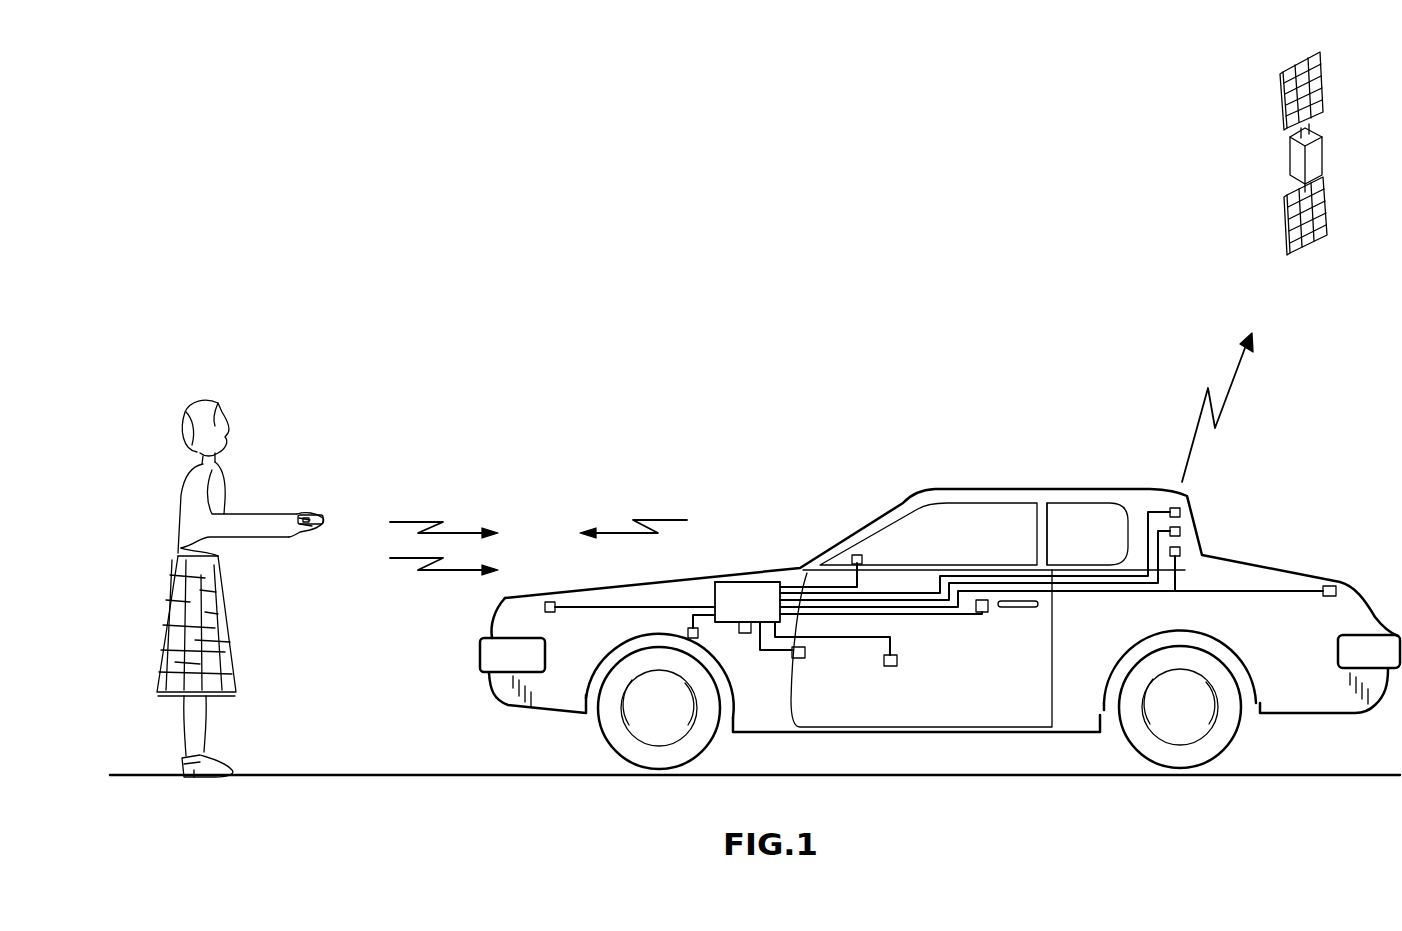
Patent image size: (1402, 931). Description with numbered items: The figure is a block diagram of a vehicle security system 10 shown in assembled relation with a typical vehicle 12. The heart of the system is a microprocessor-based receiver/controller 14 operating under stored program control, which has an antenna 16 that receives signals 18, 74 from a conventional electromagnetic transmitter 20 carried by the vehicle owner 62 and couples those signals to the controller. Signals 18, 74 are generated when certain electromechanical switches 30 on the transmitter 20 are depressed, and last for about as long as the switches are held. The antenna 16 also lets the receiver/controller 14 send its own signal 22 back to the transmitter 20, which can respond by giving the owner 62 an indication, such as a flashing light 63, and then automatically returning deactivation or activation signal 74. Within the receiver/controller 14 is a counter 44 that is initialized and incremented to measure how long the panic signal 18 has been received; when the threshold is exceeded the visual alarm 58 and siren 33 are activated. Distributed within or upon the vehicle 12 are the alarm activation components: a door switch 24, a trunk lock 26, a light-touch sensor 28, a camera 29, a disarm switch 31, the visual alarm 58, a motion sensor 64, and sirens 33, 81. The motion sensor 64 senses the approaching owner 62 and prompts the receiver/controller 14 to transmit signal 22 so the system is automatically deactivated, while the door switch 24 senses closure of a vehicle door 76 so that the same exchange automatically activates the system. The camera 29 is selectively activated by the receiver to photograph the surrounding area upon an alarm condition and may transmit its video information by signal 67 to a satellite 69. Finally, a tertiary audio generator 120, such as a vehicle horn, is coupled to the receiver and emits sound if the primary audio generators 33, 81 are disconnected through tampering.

The vehicle security system 10 is at (1297, 528).
The vehicle 12 is at (1083, 718).
The receiver/controller 14 is at (765, 617).
The antenna 16 is at (713, 590).
The signal 18 is at (410, 520).
The transmitter 20 is at (323, 514).
The signal 22 is at (667, 522).
The door switch 24 is at (984, 614).
The trunk lock 26 is at (1328, 597).
The light-touch sensor 28 is at (798, 660).
The camera 29 is at (1182, 552).
The electromechanical switches 30 is at (310, 529).
The disarm switch 31 is at (862, 559).
The siren 33 is at (550, 612).
The counter 44 is at (745, 634).
The visual alarm 58 is at (1182, 532).
The vehicle owner 62 is at (268, 588).
The flashing light 63 is at (322, 526).
The motion sensor 64 is at (890, 668).
The signal 67 is at (1190, 433).
The satellite 69 is at (1290, 153).
The signal 74 is at (406, 560).
The vehicle door 76 is at (1013, 705).
The siren 81 is at (1182, 513).
The tertiary audio generator 120 is at (688, 633).